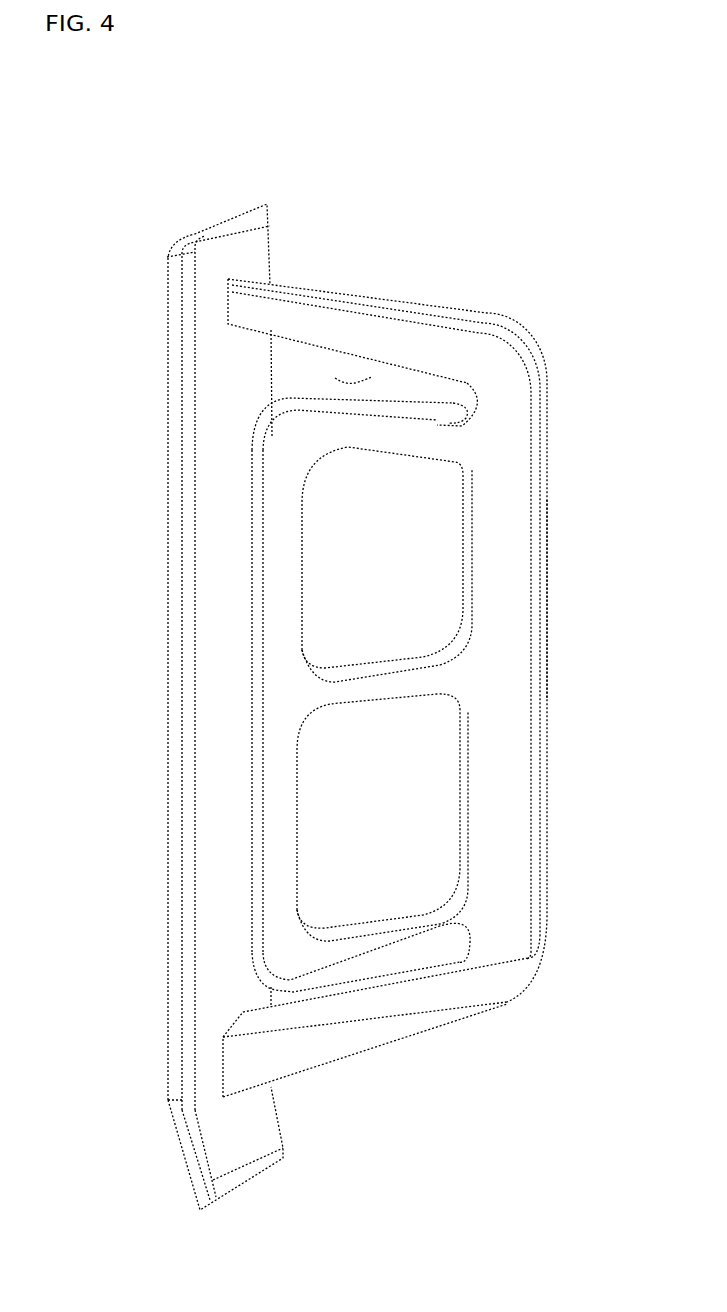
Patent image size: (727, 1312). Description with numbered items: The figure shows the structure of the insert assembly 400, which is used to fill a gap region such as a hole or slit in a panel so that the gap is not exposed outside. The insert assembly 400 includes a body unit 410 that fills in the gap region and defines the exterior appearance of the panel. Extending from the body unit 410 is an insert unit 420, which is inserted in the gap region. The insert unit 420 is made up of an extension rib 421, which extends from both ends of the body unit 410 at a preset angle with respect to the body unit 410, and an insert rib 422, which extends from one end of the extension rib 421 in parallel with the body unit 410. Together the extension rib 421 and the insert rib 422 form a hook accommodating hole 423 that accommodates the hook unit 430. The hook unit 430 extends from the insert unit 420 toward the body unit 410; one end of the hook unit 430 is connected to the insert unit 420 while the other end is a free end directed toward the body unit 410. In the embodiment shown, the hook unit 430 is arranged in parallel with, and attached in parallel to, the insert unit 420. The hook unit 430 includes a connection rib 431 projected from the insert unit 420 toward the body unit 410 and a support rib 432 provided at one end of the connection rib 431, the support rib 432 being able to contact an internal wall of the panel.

The insert assembly 400 is at (110, 208).
The body unit 410 is at (170, 940).
The insert unit 420 is at (512, 456).
The extension rib 421 is at (293, 310).
The insert rib 422 is at (512, 606).
The hook accommodating hole 423 is at (355, 382).
The hook unit 430 is at (300, 437).
The connection rib 431 is at (388, 438).
The support rib 432 is at (283, 700).